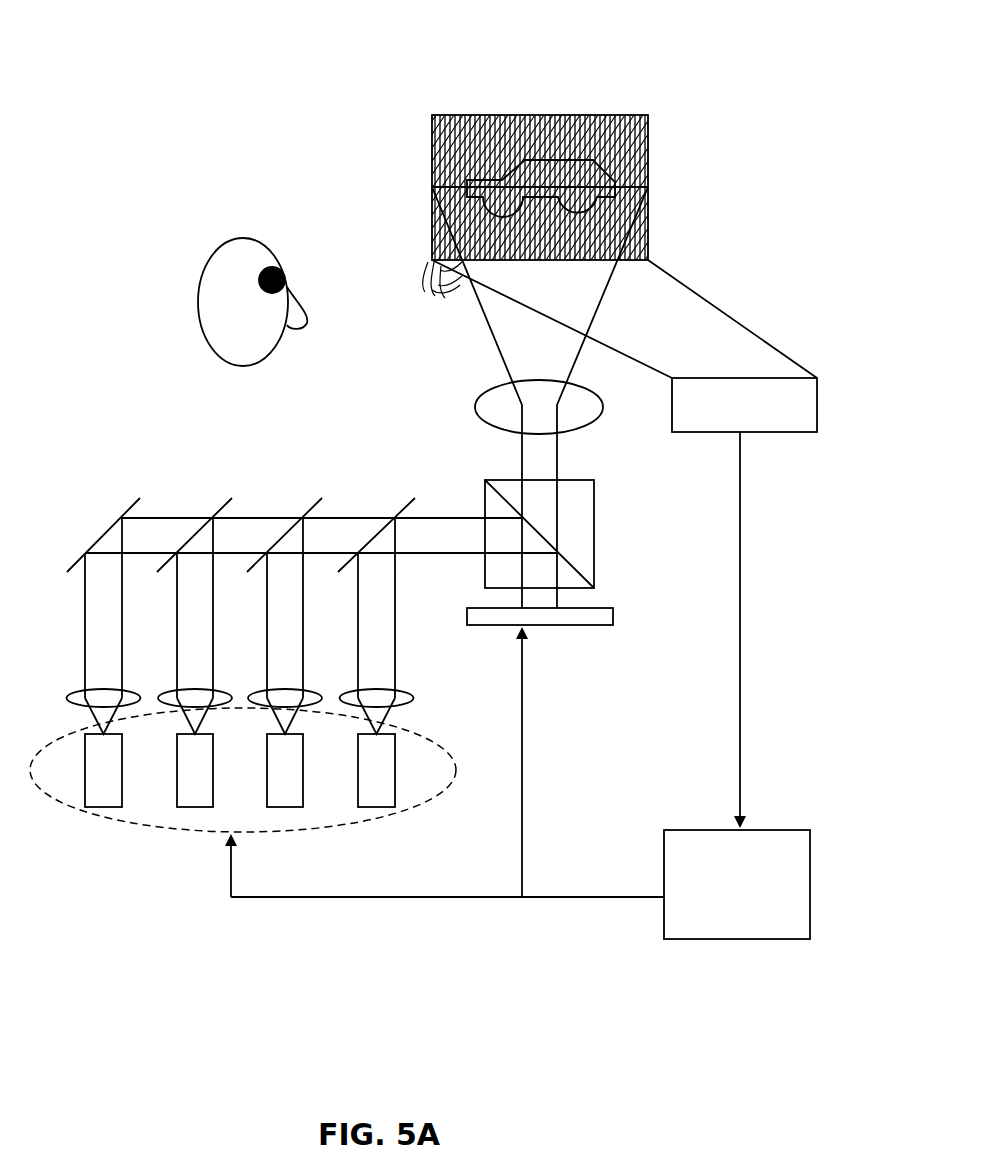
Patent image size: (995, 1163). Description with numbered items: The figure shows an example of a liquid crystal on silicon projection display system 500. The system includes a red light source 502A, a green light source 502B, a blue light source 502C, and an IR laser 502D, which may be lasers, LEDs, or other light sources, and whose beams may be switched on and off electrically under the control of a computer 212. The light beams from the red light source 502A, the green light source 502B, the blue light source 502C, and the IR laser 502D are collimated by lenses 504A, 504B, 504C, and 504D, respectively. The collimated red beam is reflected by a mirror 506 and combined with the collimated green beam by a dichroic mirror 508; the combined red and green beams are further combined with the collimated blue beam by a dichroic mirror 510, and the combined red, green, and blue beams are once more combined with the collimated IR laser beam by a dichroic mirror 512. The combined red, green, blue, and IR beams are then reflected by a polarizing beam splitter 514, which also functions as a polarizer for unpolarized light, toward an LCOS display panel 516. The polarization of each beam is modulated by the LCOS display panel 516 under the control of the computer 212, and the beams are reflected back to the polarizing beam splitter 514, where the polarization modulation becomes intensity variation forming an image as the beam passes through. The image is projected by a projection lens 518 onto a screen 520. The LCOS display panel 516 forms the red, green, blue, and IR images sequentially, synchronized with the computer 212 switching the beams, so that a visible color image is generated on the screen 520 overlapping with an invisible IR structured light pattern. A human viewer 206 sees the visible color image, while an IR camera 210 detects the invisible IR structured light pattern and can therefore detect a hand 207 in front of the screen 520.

The LCOS projection display system 500 is at (302, 78).
The screen 520 is at (477, 113).
The human viewer 206 is at (202, 280).
The hand 207 is at (425, 272).
The projection lens 518 is at (478, 395).
The IR camera 210 is at (818, 403).
The polarizing beam splitter (PBS) 514 is at (594, 500).
The LCOS display panel 516 is at (600, 605).
The mirror 506 is at (138, 502).
The dichroic mirror 508 is at (230, 502).
The dichroic mirror 510 is at (320, 502).
The dichroic mirror 512 is at (411, 502).
The lens 504A is at (107, 690).
The lens 504B is at (199, 690).
The lens 504C is at (289, 690).
The lens 504D is at (395, 688).
The red (R) light source 502A is at (110, 807).
The green (G) light source 502B is at (200, 807).
The blue (B) light source 502C is at (297, 807).
The IR laser 502D is at (385, 807).
The computer 212 is at (810, 865).